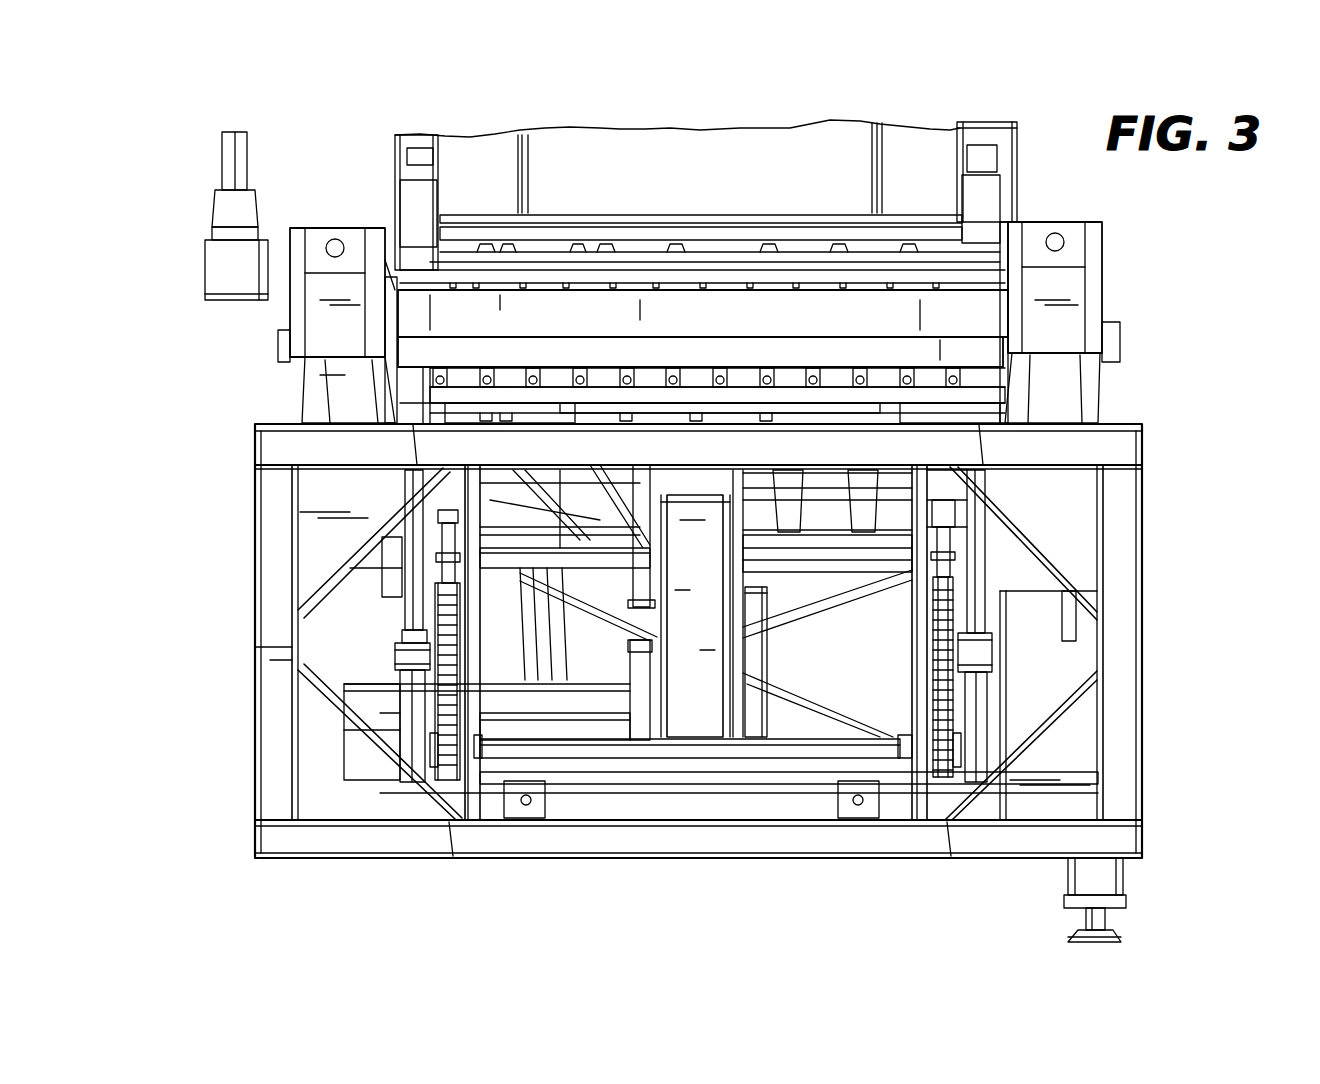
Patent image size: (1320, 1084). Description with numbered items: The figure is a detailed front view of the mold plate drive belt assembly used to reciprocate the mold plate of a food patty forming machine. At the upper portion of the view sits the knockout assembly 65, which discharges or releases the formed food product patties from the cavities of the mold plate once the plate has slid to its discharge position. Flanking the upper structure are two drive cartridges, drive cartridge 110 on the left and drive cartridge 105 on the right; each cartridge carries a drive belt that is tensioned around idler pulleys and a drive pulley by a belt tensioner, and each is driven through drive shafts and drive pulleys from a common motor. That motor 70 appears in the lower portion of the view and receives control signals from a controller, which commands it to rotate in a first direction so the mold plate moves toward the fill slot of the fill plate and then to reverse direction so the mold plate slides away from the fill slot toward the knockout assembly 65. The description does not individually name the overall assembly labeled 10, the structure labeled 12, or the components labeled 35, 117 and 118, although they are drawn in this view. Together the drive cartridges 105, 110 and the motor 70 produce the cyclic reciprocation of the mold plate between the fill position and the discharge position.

The apparatus 10 is at (212, 668).
The frame 12 is at (1118, 668).
The clamp bar assembly 35 is at (810, 317).
The knockout assembly 65 is at (918, 155).
The motor 70 is at (572, 722).
The drive cartridge 105 is at (1120, 306).
The drive cartridge 110 is at (250, 365).
The post 117 is at (615, 490).
The bearing track 118 is at (907, 387).